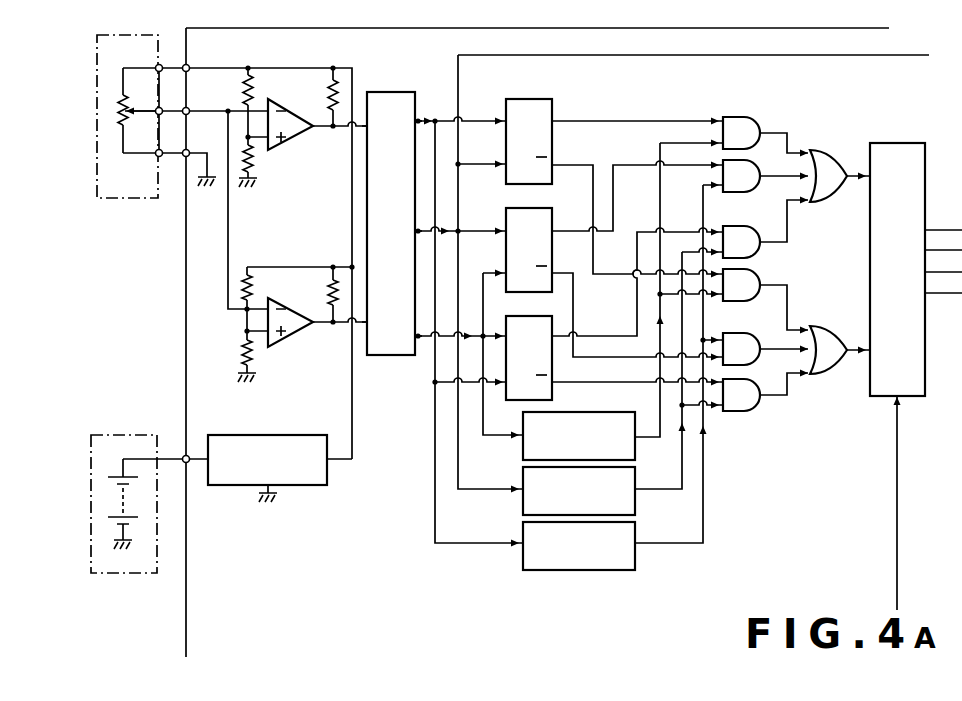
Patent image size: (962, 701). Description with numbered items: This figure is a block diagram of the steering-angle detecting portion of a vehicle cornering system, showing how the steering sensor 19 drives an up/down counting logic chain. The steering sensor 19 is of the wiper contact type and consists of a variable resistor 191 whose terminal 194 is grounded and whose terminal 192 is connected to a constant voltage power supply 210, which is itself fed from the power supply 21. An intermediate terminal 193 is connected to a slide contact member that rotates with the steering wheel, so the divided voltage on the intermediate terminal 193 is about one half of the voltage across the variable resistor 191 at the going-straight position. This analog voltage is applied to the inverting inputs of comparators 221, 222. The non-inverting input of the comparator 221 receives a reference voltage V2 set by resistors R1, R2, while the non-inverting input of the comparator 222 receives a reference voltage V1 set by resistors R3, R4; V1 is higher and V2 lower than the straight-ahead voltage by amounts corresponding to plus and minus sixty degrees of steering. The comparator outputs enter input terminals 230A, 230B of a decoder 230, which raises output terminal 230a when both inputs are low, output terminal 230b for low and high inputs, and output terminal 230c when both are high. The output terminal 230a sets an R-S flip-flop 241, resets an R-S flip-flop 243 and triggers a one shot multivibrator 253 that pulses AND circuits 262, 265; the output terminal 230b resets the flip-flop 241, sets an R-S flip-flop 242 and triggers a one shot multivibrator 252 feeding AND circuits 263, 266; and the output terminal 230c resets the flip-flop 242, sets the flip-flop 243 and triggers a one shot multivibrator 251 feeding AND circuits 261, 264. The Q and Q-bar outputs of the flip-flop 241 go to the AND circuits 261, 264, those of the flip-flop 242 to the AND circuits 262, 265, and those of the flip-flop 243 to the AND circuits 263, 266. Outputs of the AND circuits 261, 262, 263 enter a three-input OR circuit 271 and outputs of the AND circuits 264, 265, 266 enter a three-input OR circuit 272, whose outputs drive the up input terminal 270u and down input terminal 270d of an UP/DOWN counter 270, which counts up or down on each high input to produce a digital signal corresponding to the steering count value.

The steering sensor 19 is at (97, 47).
The variable resistor 191 is at (121, 107).
The terminal 192 is at (158, 66).
The intermediate terminal 193 is at (158, 108).
The terminal 194 is at (158, 150).
The resistor R1 is at (243, 91).
The resistor R2 is at (253, 165).
The resistor R3 is at (253, 282).
The resistor R4 is at (243, 345).
The reference voltage V1 is at (290, 335).
The reference voltage V2 is at (290, 136).
The comparator 221 is at (305, 112).
The comparator 222 is at (307, 313).
The power supply 21 is at (91, 463).
The constant voltage power supply 210 is at (308, 435).
The decoder 230 is at (408, 92).
The input terminal 230A is at (370, 122).
The input terminal 230B is at (369, 356).
The output terminal 230a is at (419, 119).
The output terminal 230b is at (419, 230).
The output terminal 230c is at (416, 340).
The R-S flip-flop 241 is at (553, 108).
The R-S flip-flop 242 is at (553, 216).
The R-S flip-flop 243 is at (553, 395).
The one shot multivibrator 251 is at (636, 450).
The one shot multivibrator 252 is at (636, 506).
The one shot multivibrator 253 is at (636, 566).
The AND circuit 261 is at (756, 151).
The AND circuit 262 is at (756, 194).
The AND circuit 263 is at (756, 260).
The AND circuit 264 is at (756, 303).
The AND circuit 265 is at (756, 367).
The AND circuit 266 is at (756, 413).
The three-input OR circuit 271 is at (838, 192).
The three-input OR circuit 272 is at (838, 367).
The UP/DOWN counter 270 is at (912, 143).
The up input terminal 270u is at (868, 172).
The down input terminal 270d is at (868, 347).